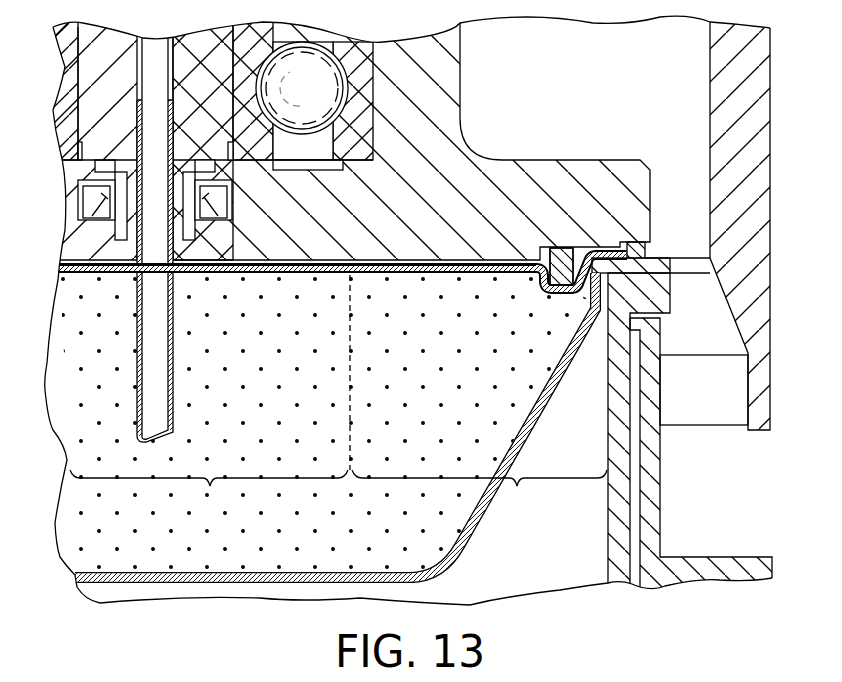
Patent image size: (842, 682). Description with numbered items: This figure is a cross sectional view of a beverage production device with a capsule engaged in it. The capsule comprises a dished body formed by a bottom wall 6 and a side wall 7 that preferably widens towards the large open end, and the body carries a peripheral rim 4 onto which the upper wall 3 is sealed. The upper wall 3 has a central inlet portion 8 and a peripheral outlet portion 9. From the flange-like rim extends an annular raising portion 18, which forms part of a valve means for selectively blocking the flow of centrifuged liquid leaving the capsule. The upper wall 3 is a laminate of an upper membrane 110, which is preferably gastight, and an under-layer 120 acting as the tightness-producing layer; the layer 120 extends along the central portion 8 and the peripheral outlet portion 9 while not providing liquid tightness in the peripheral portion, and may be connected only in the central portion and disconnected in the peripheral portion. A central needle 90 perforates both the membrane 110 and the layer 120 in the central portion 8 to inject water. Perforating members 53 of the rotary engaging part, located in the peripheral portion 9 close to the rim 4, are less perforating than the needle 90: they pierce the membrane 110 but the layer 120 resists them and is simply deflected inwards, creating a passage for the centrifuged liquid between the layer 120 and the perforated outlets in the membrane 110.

The upper wall 3 is at (512, 292).
The peripheral rim 4 is at (672, 273).
The bottom wall 6 is at (231, 584).
The side wall 7 is at (470, 537).
The central inlet portion 8 is at (209, 490).
The peripheral outlet portion 9 is at (479, 490).
The annular raising portion 18 is at (647, 243).
The perforating members 53 is at (565, 250).
The needle 90 is at (137, 316).
The upper membrane 110 is at (497, 262).
The under-layer 120 is at (262, 274).